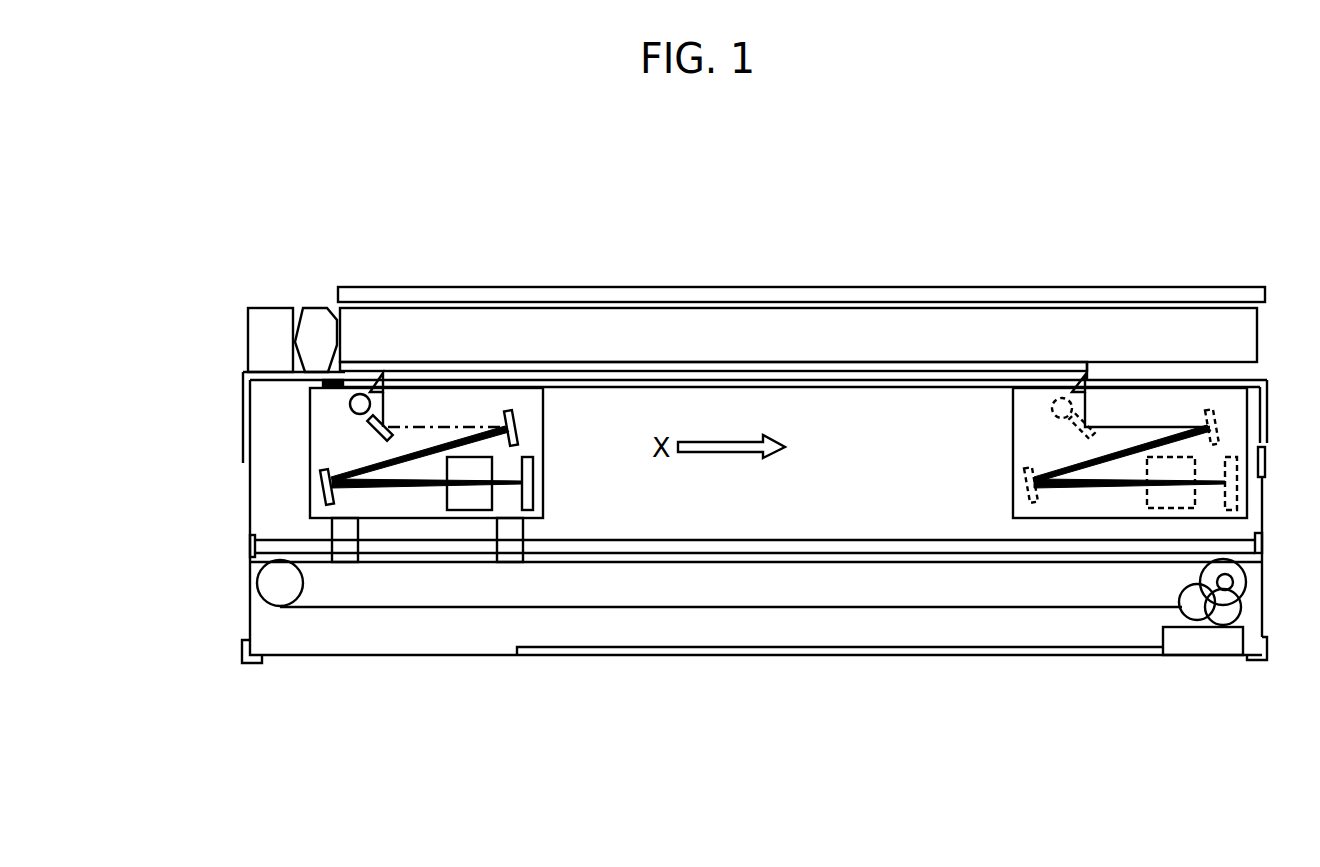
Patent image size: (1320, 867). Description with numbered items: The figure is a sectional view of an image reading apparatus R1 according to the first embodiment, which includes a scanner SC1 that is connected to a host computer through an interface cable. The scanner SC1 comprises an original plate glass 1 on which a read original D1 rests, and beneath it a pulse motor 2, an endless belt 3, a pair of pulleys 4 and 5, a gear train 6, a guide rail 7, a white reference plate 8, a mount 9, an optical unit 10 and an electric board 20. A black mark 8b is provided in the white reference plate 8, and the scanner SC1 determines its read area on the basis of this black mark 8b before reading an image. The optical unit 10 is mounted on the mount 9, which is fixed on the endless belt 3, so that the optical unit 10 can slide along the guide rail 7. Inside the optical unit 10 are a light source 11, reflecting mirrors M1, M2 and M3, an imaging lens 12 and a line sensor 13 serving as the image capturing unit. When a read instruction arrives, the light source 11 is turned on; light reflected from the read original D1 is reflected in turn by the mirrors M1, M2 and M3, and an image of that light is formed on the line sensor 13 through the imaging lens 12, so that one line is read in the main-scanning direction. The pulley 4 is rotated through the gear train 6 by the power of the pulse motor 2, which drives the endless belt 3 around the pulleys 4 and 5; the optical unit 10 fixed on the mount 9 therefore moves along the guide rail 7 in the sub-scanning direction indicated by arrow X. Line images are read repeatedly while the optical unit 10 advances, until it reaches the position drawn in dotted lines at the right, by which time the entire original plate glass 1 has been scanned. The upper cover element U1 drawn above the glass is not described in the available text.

The original plate glass 1 is at (818, 372).
The reading unit upper cover U1 is at (895, 360).
The read original D1 is at (578, 364).
The image reading apparatus R1 is at (310, 181).
The scanner SC1 is at (277, 656).
The pulse motor 2 is at (1188, 640).
The endless belt 3 is at (393, 608).
The pulley 4 is at (1238, 606).
The pulley 5 is at (257, 580).
The gear train 6 is at (1182, 608).
The guide rail 7 is at (913, 542).
The white reference plate 8 is at (320, 383).
The black mark 8b is at (325, 357).
The mount 9 is at (345, 562).
The optical unit 10 is at (405, 400).
The light source 11 is at (350, 404).
The imaging lens 12 is at (462, 510).
The line sensor 13 is at (527, 458).
The electric board 20 is at (762, 650).
The reflecting mirror M1 is at (370, 433).
The reflecting mirror M2 is at (508, 412).
The reflecting mirror M3 is at (322, 484).